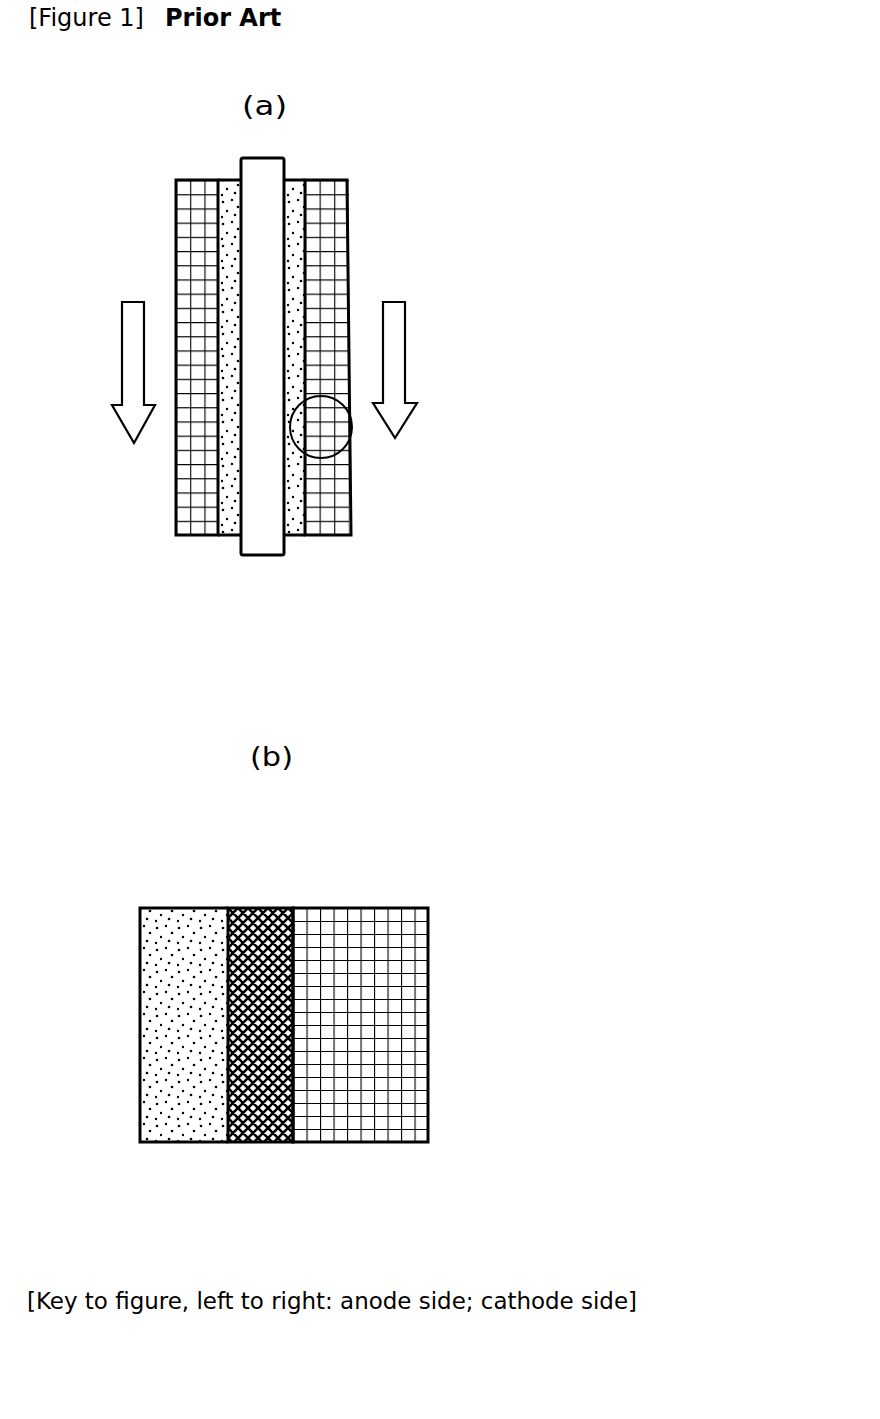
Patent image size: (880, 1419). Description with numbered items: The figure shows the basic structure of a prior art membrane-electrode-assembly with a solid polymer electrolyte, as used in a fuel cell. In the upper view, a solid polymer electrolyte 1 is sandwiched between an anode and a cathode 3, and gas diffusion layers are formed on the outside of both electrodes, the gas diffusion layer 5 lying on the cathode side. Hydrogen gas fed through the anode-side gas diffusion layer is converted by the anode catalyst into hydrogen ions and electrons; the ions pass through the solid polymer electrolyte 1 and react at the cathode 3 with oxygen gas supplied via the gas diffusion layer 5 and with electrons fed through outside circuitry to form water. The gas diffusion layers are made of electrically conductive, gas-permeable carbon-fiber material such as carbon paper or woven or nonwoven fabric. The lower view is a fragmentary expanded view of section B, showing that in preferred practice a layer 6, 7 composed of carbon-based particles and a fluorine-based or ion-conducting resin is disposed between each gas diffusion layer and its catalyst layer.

The solid polymer electrolyte 1 is at (265, 531).
The cathode 3 is at (293, 523).
The gas diffusion layer 5 is at (351, 488).
The layer 6 is at (261, 908).
The layer 7 is at (271, 986).
The section B is at (351, 463).